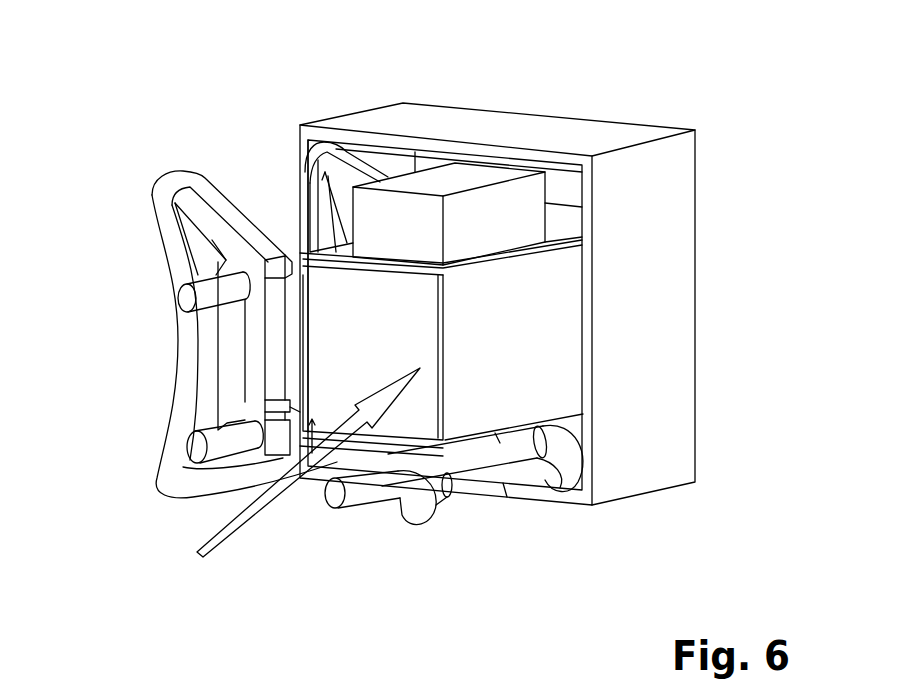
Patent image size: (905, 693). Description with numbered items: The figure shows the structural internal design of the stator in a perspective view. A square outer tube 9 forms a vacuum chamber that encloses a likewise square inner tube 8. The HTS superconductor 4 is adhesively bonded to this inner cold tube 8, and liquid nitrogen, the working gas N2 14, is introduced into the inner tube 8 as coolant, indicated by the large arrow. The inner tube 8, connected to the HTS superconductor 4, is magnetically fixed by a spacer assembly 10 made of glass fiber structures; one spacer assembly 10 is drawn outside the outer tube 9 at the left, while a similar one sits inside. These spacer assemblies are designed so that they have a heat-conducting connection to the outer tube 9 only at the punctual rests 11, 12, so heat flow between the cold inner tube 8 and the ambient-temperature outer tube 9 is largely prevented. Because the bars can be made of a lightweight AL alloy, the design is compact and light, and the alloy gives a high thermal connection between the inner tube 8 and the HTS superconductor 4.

The HTS superconductor 4 is at (417, 185).
The inner tube 8 is at (490, 363).
The outer tube 9 is at (497, 133).
The spacer assembly 10 is at (190, 480).
The punctual rest 11 is at (162, 173).
The punctual rest 12 is at (300, 127).
The working gas N2 14 is at (299, 486).